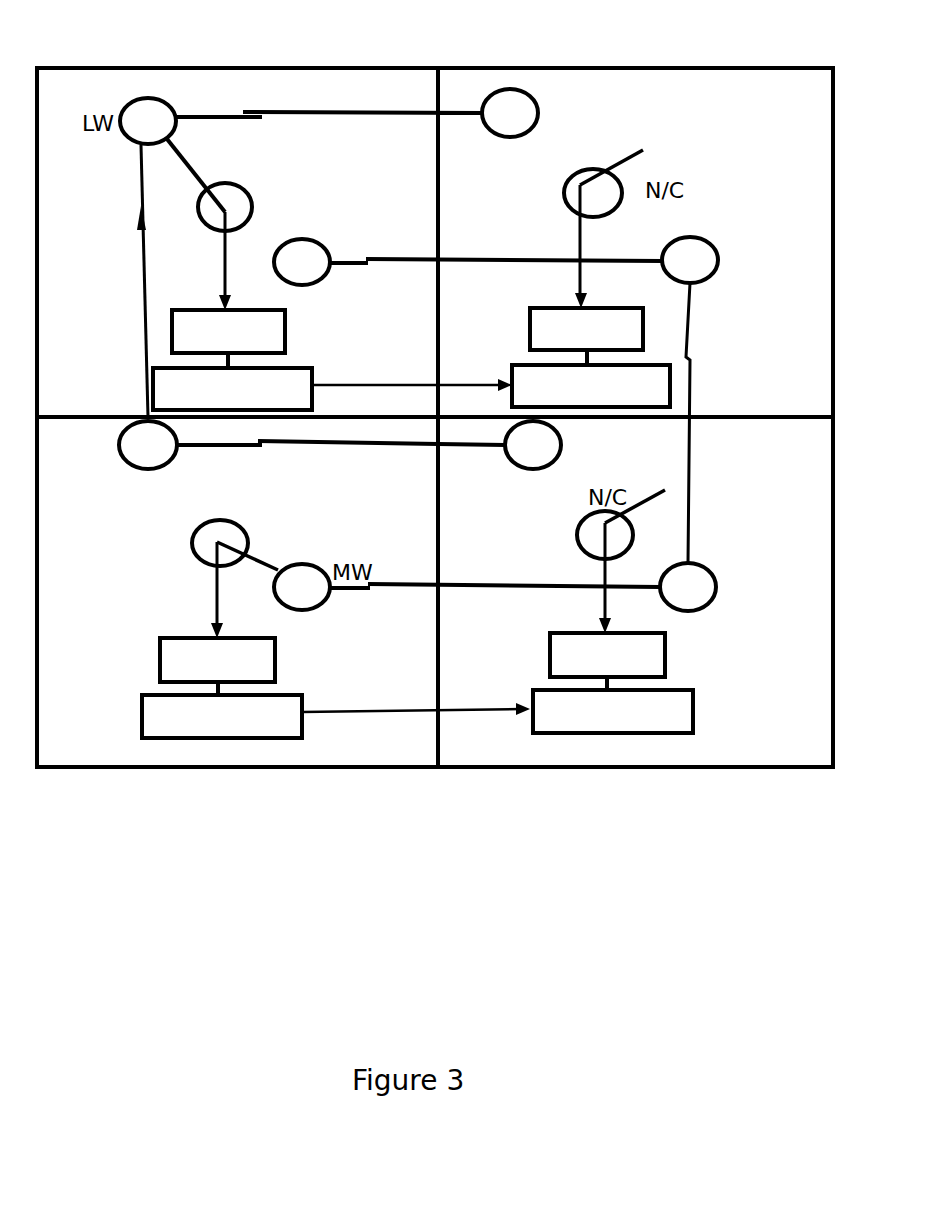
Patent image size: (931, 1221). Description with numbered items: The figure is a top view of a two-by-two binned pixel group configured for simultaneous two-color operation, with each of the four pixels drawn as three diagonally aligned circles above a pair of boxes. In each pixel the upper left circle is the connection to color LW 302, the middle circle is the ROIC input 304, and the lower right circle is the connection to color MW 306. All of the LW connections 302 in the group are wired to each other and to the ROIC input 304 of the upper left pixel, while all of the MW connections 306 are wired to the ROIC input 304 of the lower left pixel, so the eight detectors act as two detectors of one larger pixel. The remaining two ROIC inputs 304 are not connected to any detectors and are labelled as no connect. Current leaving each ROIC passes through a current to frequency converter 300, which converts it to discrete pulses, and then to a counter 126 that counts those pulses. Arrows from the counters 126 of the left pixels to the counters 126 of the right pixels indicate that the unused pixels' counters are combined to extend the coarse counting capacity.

The connection to color LW 302 is at (148, 98).
The ROIC input 304 is at (253, 214).
The connection to color MW 306 is at (307, 609).
The current to frequency converter (I2F) 300 is at (412, 495).
The counter 126 is at (417, 551).